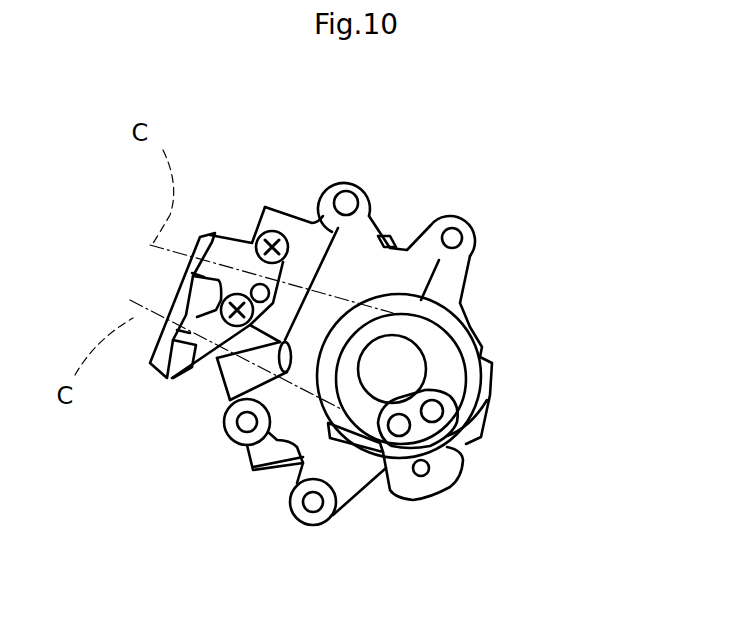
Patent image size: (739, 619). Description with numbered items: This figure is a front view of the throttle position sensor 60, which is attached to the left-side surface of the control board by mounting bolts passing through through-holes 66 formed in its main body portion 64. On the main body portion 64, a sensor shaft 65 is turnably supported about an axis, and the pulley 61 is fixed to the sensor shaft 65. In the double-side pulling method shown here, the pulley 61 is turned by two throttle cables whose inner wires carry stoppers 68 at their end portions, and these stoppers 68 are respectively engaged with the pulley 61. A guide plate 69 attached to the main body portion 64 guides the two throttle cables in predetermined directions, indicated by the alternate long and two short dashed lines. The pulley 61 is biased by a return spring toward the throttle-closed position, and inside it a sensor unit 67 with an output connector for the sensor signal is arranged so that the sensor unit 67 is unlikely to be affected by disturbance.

The throttle position sensor 60 is at (281, 148).
The pulley 61 is at (455, 343).
The main body portion 64 is at (260, 217).
The sensor shaft 65 is at (400, 365).
The through-holes 66 is at (347, 196).
The sensor unit 67 is at (265, 460).
The stoppers 68 is at (432, 412).
The guide plate 69 is at (170, 362).